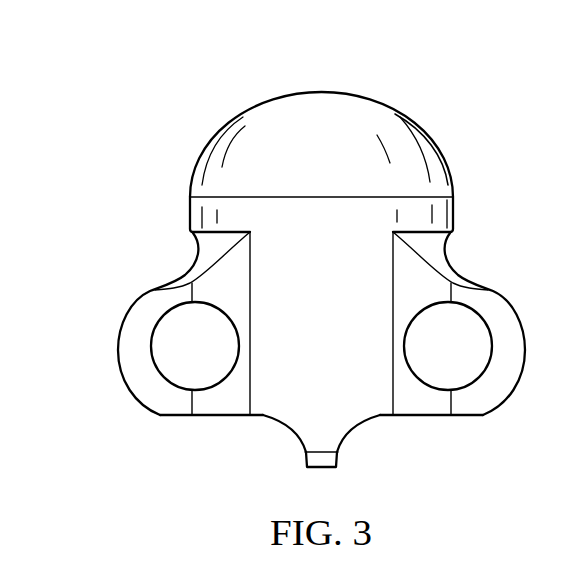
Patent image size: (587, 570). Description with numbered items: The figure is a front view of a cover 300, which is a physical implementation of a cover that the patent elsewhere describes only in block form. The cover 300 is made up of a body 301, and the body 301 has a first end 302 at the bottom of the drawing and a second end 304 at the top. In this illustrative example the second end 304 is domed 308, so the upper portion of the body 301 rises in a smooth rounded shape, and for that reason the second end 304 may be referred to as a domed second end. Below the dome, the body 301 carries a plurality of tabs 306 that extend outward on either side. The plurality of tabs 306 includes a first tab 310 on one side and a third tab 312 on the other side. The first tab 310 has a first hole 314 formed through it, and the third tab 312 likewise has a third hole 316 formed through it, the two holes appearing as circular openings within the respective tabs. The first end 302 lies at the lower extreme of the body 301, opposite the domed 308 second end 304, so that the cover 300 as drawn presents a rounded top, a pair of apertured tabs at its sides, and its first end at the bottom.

The cover 300 is at (208, 58).
The body 301 is at (378, 82).
The first end 302 is at (275, 447).
The second end 304 is at (277, 90).
The plurality of tabs 306 is at (108, 392).
The domed 308 is at (324, 118).
The first tab 310 is at (150, 307).
The third tab 312 is at (492, 306).
The first hole 314 is at (163, 372).
The third hole 316 is at (480, 372).